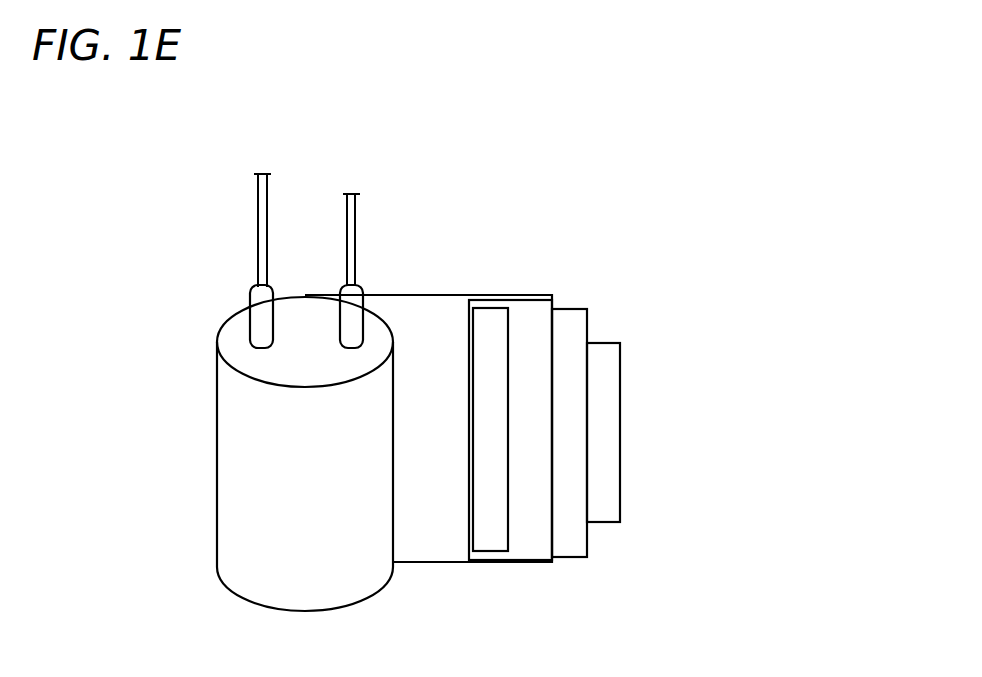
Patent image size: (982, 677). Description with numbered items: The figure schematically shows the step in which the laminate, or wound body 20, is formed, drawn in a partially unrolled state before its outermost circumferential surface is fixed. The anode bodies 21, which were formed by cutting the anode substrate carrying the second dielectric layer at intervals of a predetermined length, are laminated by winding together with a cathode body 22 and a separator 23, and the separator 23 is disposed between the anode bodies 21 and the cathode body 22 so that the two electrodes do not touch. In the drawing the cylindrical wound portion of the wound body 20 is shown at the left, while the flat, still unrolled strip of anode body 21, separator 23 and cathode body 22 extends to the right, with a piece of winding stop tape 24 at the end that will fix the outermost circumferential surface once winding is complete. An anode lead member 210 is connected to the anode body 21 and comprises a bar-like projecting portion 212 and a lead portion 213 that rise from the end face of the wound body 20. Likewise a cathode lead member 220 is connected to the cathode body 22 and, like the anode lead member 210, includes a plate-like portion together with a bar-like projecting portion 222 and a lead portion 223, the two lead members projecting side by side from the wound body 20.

The laminate (wound body) 20 is at (187, 433).
The anode body 21 is at (497, 535).
The cathode body 22 is at (572, 550).
The separator 23 is at (441, 535).
The winding stop tape 24 is at (603, 512).
The anode lead member 210 is at (184, 261).
The bar-like portion (projecting portion) 212 is at (258, 303).
The lead portion 213 is at (259, 206).
The cathode lead member 220 is at (427, 265).
The bar-like portion (projecting portion) 222 is at (356, 303).
The lead portion 223 is at (357, 201).